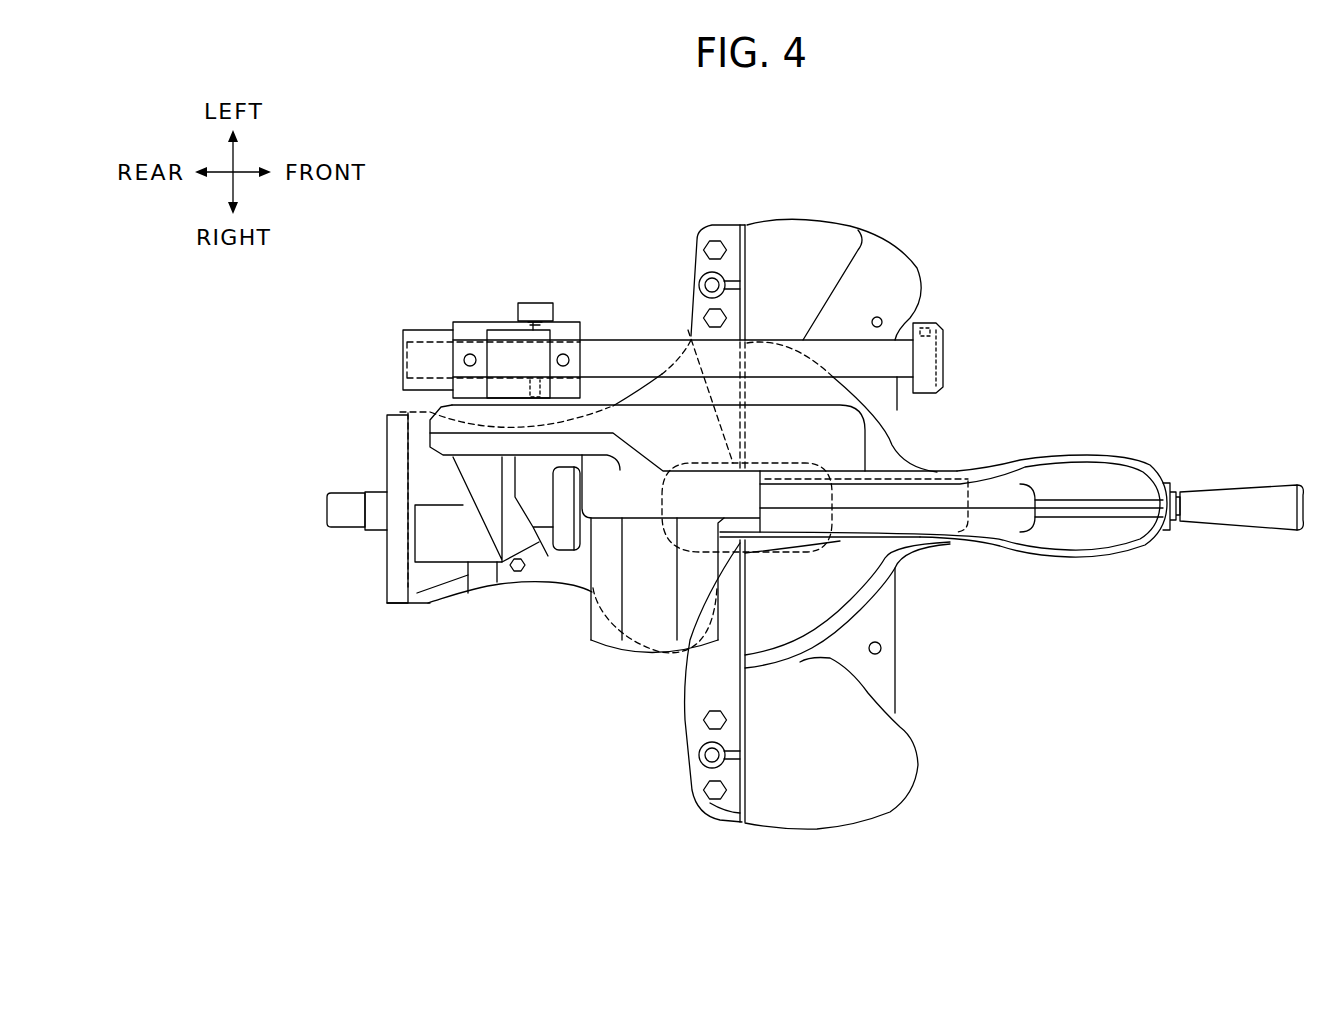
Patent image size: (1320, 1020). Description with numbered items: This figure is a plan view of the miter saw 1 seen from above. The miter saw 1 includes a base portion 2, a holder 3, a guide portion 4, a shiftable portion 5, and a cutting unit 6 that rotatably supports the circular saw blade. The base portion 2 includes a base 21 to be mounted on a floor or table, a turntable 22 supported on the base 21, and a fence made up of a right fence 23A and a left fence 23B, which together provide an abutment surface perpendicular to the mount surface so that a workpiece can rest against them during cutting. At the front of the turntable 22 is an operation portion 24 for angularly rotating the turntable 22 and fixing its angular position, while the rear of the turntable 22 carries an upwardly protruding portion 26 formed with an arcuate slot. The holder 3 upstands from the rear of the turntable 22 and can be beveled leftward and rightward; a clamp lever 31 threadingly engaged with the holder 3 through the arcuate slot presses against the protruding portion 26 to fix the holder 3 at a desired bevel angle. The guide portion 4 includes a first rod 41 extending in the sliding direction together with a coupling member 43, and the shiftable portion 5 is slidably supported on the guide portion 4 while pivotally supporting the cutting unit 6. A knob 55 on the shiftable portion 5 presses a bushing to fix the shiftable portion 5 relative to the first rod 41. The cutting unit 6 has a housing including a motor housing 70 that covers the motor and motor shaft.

The miter saw 1 is at (1032, 276).
The base portion 2 is at (906, 678).
The holder 3 is at (455, 555).
The guide portion 4 is at (847, 329).
The shiftable portion 5 is at (494, 310).
The cutting unit 6 is at (873, 438).
The base 21 is at (853, 769).
The turntable 22 is at (828, 588).
The right fence 23A is at (742, 758).
The left fence 23B is at (747, 258).
The operation portion 24 is at (1258, 512).
The protruding portion 26 is at (395, 590).
The clamp lever 31 is at (346, 507).
The first rod 41 is at (632, 355).
The coupling member 43 is at (935, 352).
The knob 55 is at (535, 304).
The motor housing 70 is at (652, 617).